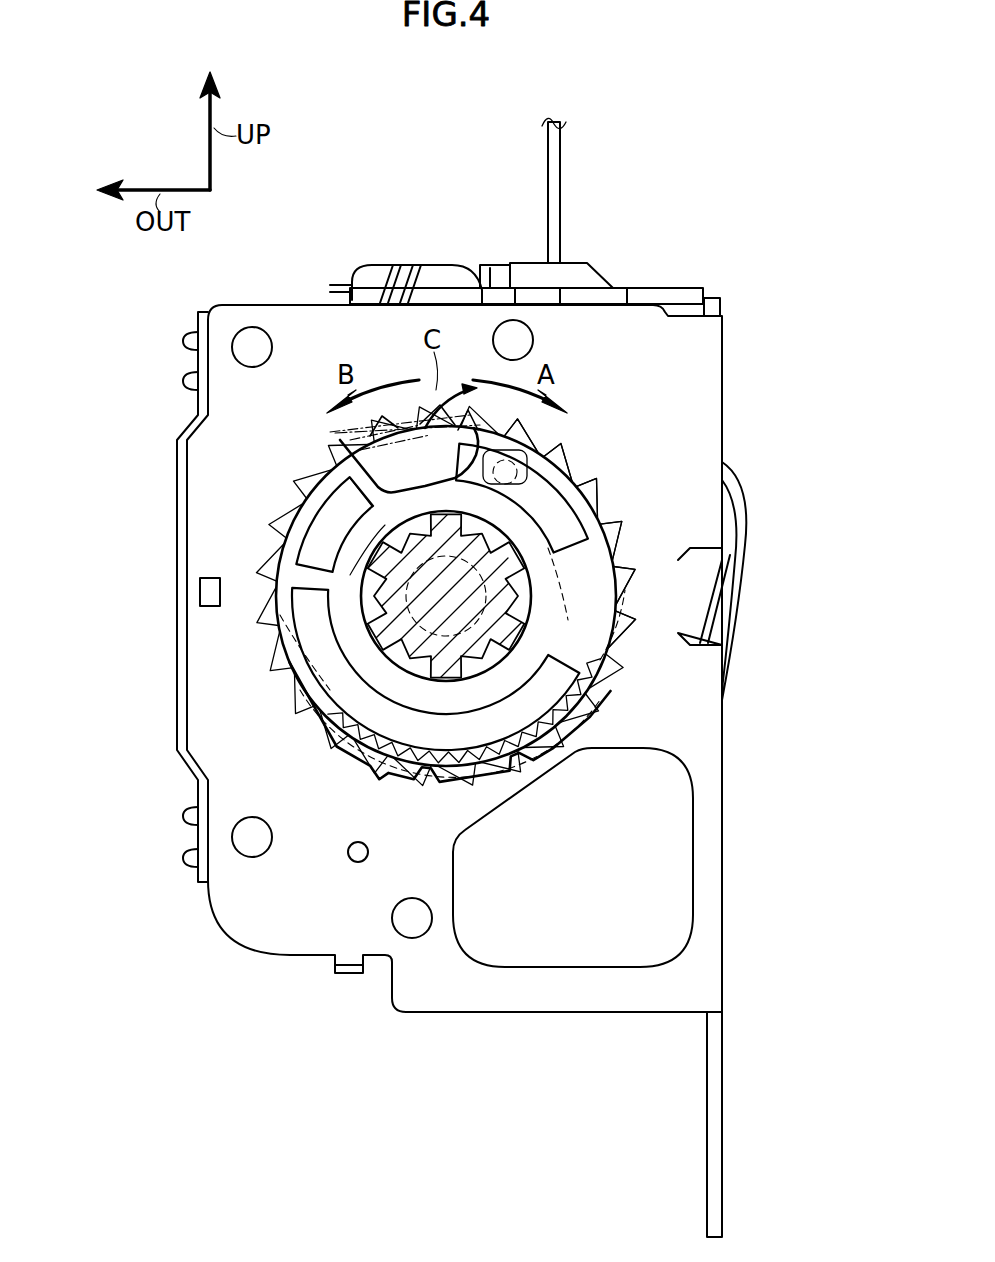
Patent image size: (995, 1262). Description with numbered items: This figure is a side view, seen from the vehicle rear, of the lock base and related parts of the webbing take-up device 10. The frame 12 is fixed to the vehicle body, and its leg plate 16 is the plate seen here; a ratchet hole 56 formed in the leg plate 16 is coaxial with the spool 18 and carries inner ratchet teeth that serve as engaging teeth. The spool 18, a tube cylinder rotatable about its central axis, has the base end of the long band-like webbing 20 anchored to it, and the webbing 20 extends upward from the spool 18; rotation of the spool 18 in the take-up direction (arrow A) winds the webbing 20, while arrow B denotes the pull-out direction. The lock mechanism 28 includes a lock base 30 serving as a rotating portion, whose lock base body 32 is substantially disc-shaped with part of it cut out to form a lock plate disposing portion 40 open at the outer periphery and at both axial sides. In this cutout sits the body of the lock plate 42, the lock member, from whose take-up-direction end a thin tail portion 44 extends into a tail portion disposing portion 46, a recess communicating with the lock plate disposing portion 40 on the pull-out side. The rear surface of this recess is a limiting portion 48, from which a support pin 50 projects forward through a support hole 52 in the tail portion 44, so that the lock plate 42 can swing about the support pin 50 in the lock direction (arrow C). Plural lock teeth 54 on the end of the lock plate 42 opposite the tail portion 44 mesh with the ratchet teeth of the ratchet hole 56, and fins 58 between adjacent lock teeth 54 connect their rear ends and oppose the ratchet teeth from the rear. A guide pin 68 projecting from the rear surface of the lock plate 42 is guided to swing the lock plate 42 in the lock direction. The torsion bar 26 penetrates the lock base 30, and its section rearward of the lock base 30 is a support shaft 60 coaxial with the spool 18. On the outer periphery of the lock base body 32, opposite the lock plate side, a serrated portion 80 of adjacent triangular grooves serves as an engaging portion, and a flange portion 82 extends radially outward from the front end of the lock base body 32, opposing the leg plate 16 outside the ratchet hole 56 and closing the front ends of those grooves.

The webbing take-up device 10 is at (767, 232).
The frame 12 is at (724, 962).
The leg plate 16 is at (612, 1014).
The spool 18 is at (520, 442).
The webbing 20 is at (562, 204).
The torsion bar 26 is at (436, 655).
The lock mechanism 28 is at (608, 482).
The lock base 30 is at (590, 578).
The lock base body 32 is at (600, 594).
The lock plate disposing portion 40 is at (340, 536).
The lock plate 42 is at (356, 505).
The tail portion 44 is at (575, 490).
The tail portion disposing portion 46 is at (577, 591).
The limiting portion 48 is at (560, 460).
The support pin 50 is at (560, 468).
The support hole 52 is at (520, 545).
The lock teeth 54 is at (466, 430).
The ratchet hole 56 is at (286, 650).
The fins 58 is at (360, 432).
The support shaft 60 is at (470, 700).
The guide pin 68 is at (354, 561).
The serrated portion 80 is at (455, 790).
The flange portion 82 is at (620, 663).